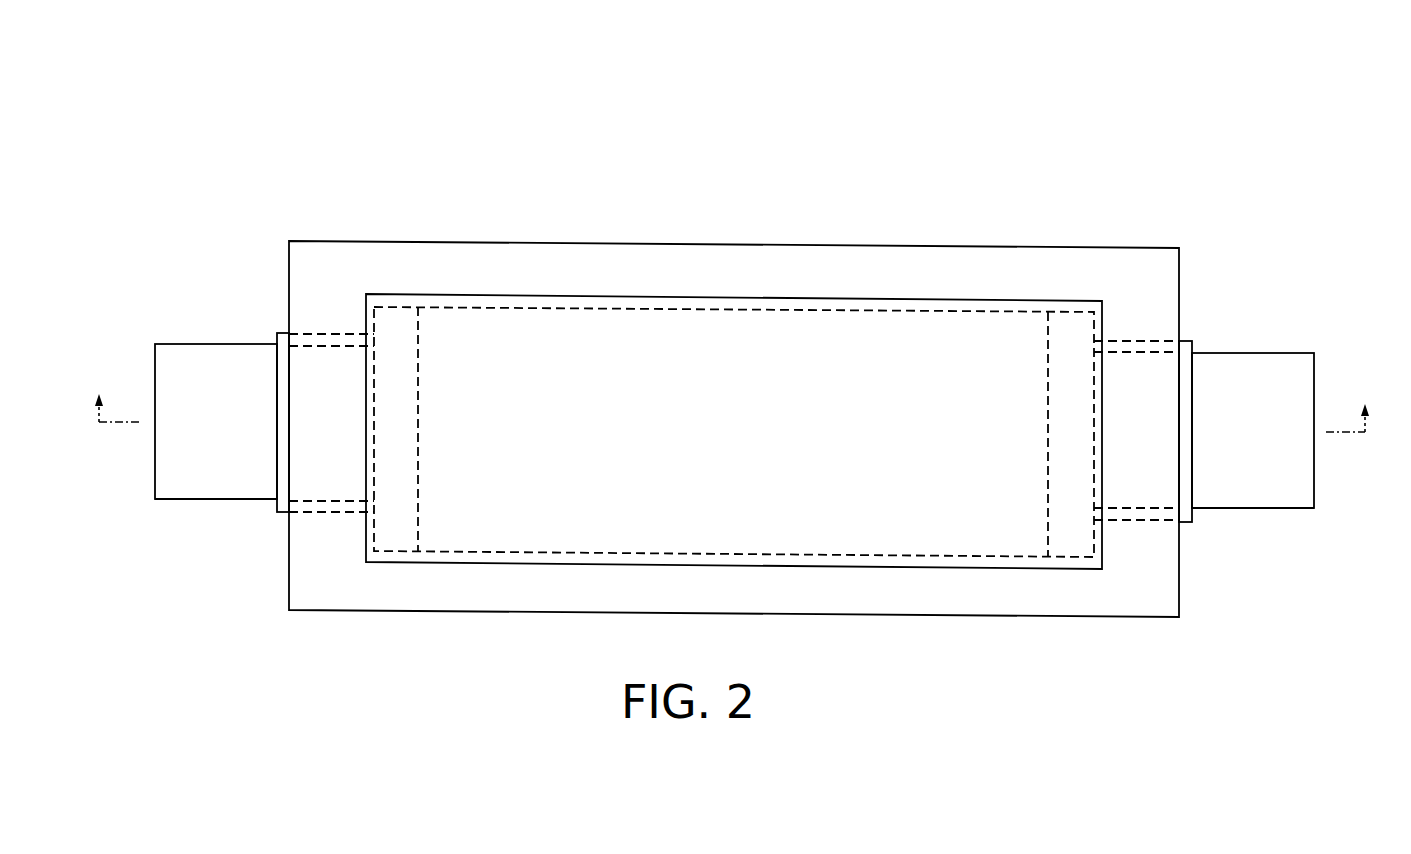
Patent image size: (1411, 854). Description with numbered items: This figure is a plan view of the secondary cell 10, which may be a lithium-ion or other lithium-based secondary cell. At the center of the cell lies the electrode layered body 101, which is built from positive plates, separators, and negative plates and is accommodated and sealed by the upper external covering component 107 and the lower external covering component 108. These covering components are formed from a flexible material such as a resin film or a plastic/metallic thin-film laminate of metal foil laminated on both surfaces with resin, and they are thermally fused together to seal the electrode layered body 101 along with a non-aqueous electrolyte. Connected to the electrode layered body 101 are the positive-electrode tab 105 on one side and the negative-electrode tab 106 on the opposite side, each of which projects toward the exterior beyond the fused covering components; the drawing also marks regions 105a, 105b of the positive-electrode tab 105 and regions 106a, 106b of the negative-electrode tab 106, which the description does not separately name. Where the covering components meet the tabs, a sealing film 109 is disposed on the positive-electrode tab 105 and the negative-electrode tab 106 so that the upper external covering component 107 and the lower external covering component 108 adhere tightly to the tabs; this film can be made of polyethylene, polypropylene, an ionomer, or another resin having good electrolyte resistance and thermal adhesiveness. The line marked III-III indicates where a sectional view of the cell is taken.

The secondary cell 10 is at (1196, 88).
The electrode layered body 101 is at (571, 339).
The positive-electrode tab 105 is at (1288, 352).
The right connection region 105a is at (1075, 307).
The right terminal block lower edge 105b is at (1244, 508).
The negative-electrode tab 106 is at (193, 343).
The left connection region 106a is at (392, 307).
The left terminal block lower edge 106b is at (203, 500).
The upper external covering component 107 is at (725, 262).
The lower external covering component 108 is at (734, 391).
The sealing film 109 is at (284, 334).